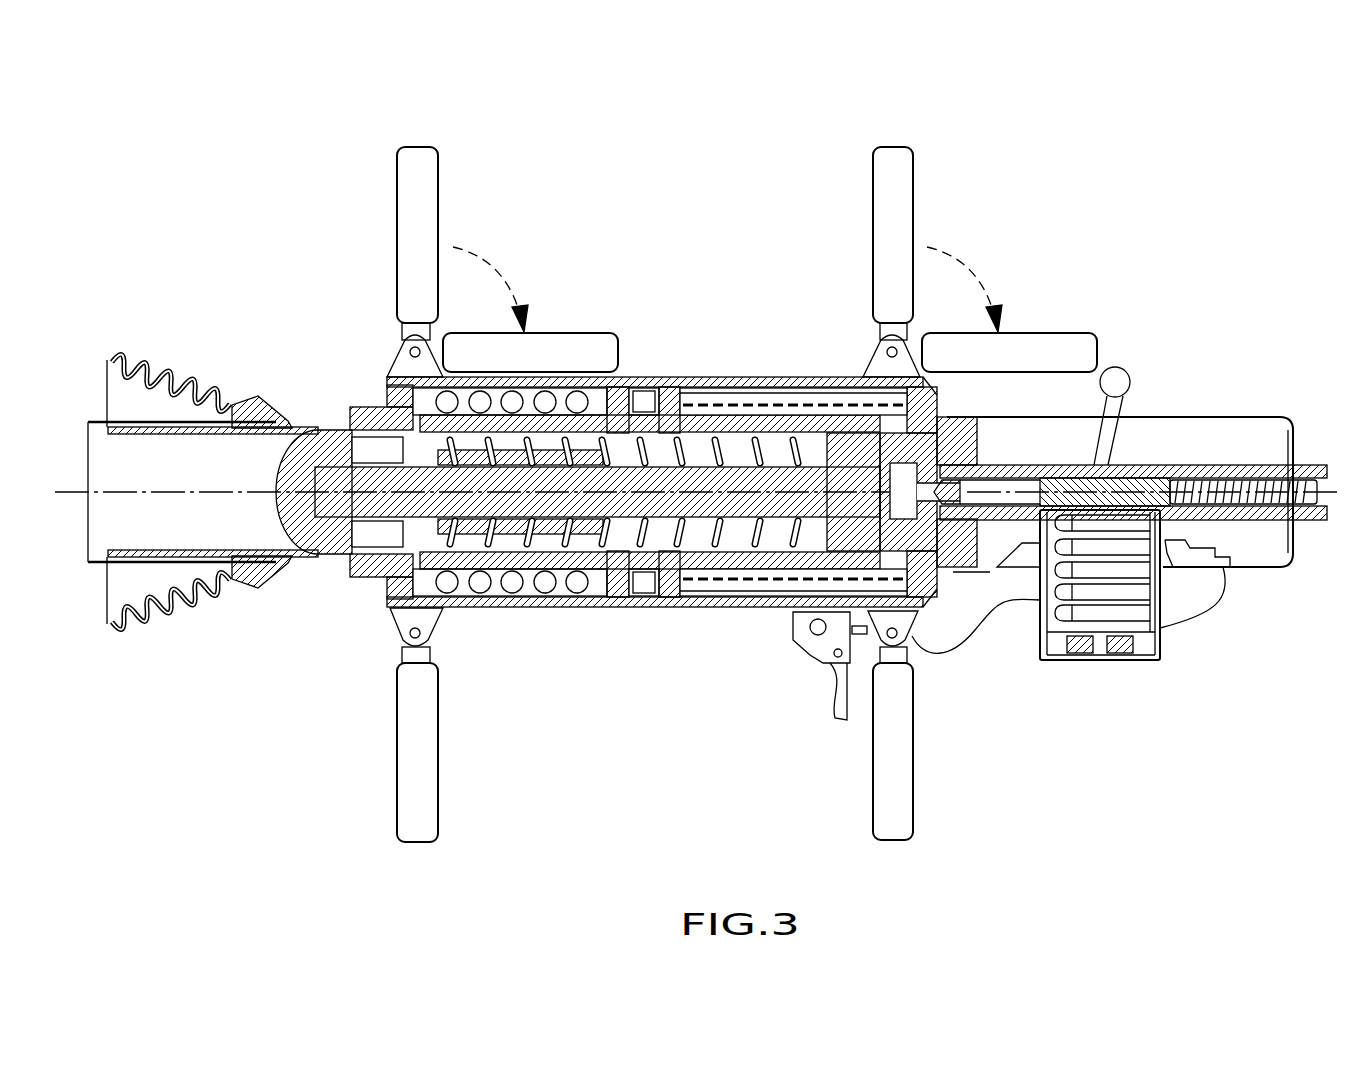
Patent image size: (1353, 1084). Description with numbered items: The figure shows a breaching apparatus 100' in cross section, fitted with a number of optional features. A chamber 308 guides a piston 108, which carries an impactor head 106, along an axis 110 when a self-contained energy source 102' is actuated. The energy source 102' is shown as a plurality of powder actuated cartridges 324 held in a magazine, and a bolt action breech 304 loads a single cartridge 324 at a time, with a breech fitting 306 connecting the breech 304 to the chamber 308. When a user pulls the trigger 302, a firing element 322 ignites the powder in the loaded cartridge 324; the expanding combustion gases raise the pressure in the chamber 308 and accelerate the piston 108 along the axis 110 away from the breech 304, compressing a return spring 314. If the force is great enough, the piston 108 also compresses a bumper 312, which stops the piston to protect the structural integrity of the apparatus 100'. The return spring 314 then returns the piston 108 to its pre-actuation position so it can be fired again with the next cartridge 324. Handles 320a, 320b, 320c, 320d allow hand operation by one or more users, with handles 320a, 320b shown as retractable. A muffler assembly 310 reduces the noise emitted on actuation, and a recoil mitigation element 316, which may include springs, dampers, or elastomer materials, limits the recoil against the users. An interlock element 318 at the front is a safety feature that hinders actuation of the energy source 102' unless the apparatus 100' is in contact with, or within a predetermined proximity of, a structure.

The breaching apparatus 100' is at (697, 272).
The self-contained energy source 102' is at (1157, 611).
The impactor head 106 is at (280, 440).
The piston 108 is at (788, 544).
The axis 110 is at (203, 493).
The trigger 302 is at (828, 728).
The breech 304 is at (1147, 477).
The breech fitting 306 is at (968, 425).
The chamber 308 is at (743, 400).
The muffler assembly 310 is at (797, 390).
The bumper 312 is at (541, 541).
The return spring 314 is at (577, 526).
The recoil mitigation element 316 is at (403, 612).
The interlock element 318 is at (87, 562).
The handle 320a is at (438, 200).
The handle 320b is at (913, 178).
The handle 320c is at (403, 763).
The handle 320d is at (873, 782).
The firing element 322 is at (1233, 467).
The powder actuated cartridge 324 is at (1107, 527).